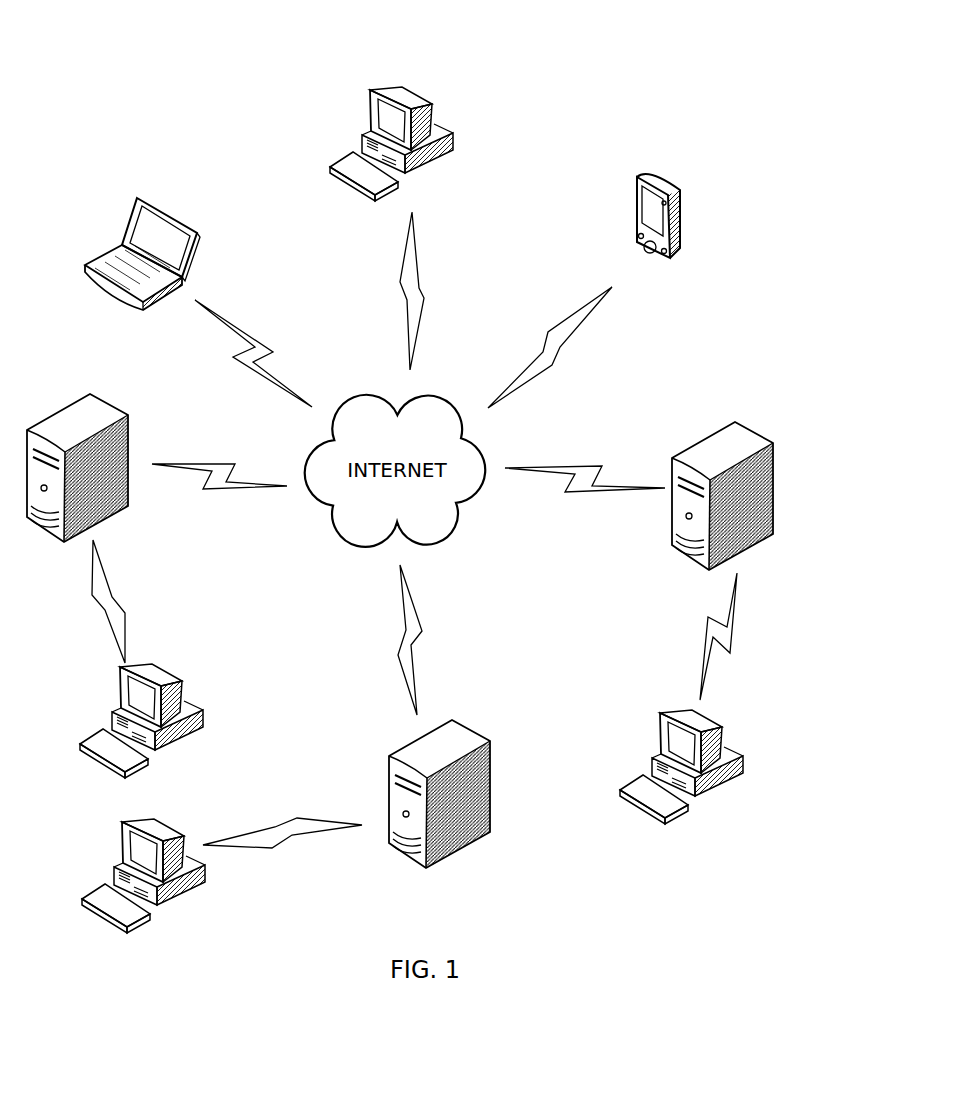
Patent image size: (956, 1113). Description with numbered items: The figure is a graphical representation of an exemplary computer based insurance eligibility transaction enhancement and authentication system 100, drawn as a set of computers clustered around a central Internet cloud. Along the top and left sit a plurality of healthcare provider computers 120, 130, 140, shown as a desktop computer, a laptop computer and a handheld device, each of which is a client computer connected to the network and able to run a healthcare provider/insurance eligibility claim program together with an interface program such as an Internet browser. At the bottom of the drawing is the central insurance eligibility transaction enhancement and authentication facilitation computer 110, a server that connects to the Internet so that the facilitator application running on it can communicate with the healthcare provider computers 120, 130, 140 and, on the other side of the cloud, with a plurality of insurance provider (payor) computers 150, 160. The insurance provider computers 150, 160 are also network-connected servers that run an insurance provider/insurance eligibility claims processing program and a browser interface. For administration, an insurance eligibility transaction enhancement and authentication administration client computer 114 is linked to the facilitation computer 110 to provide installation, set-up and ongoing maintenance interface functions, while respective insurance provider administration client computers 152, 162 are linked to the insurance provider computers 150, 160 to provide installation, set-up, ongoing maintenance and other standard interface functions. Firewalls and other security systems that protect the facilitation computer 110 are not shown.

The computer based insurance eligibility transaction enhancement and authentication 100 is at (612, 74).
The central insurance eligibility transaction enhancement and authentication facilit 110 is at (478, 738).
The insurance eligibility transaction enhancement and authentication administration 114 is at (178, 832).
The healthcare provider computer 120 is at (412, 88).
The healthcare provider computer 130 is at (140, 200).
The healthcare provider computer 140 is at (668, 180).
The insurance provider computer 150 is at (128, 440).
The insurance provider administration client computer 152 is at (188, 700).
The insurance provider computer 160 is at (740, 428).
The insurance provider administration client computer 162 is at (728, 742).